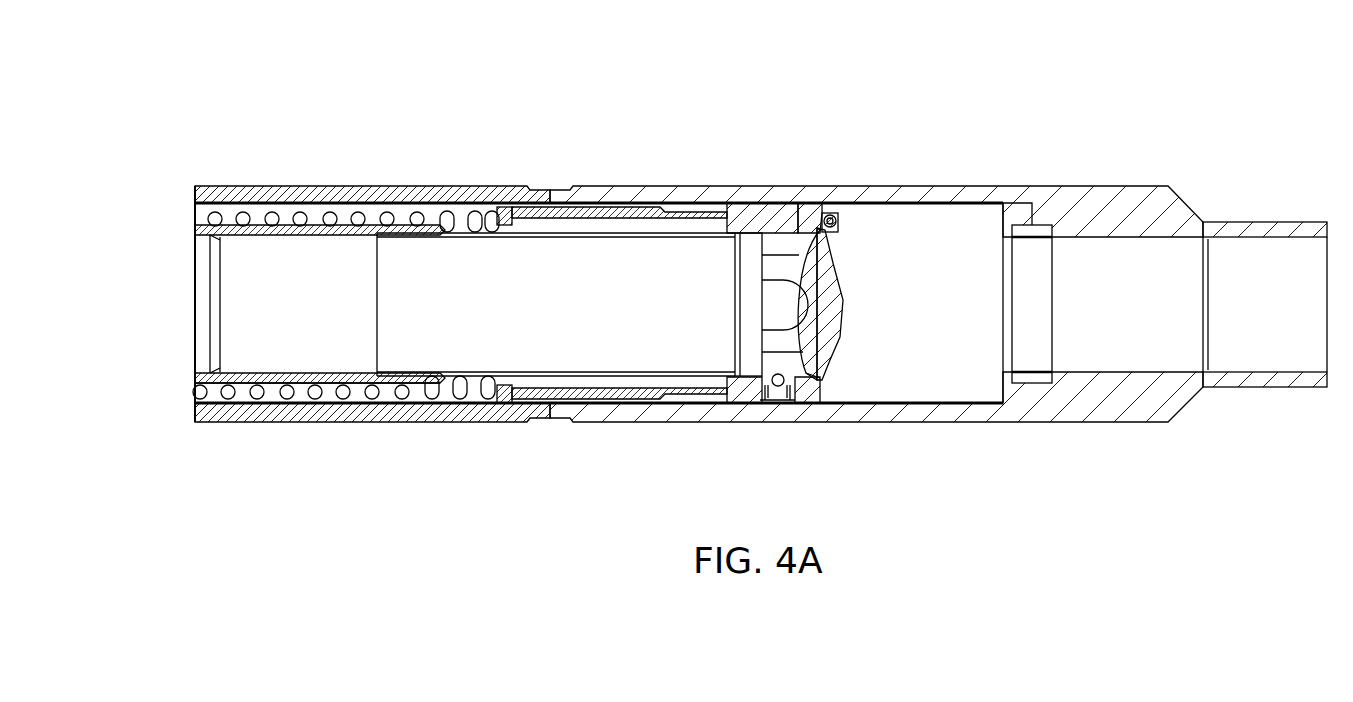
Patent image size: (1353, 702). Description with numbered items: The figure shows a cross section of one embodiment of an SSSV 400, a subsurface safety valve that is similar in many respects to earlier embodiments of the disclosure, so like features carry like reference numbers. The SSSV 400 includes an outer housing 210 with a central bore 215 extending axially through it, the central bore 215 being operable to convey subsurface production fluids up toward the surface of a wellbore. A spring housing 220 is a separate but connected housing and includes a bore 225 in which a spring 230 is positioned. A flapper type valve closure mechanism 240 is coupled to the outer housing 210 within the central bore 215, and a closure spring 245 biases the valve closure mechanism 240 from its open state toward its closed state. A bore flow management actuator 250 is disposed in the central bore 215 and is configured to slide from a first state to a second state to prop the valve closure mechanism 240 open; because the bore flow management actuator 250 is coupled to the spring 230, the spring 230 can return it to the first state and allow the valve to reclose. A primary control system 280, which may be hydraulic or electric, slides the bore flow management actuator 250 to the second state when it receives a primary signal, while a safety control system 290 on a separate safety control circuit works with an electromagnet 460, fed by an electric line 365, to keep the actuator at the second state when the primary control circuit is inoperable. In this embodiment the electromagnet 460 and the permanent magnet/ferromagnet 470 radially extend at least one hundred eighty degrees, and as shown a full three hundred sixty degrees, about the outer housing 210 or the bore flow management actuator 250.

The SSSV 400 is at (175, 76).
The outer housing 210 is at (1128, 186).
The central bore 215 is at (1282, 315).
The spring housing 220 is at (518, 186).
The bore 225 is at (415, 399).
The spring 230 is at (492, 403).
The valve closure mechanism 240 is at (818, 385).
The closure spring 245 is at (833, 213).
The bore flow management actuator 250 is at (619, 245).
The primary control system 280 is at (183, 396).
The safety control system 290 is at (183, 206).
The electric line 365 is at (938, 210).
The electromagnet 460 is at (1053, 303).
The permanent magnet/ferromagnet 470 is at (732, 302).